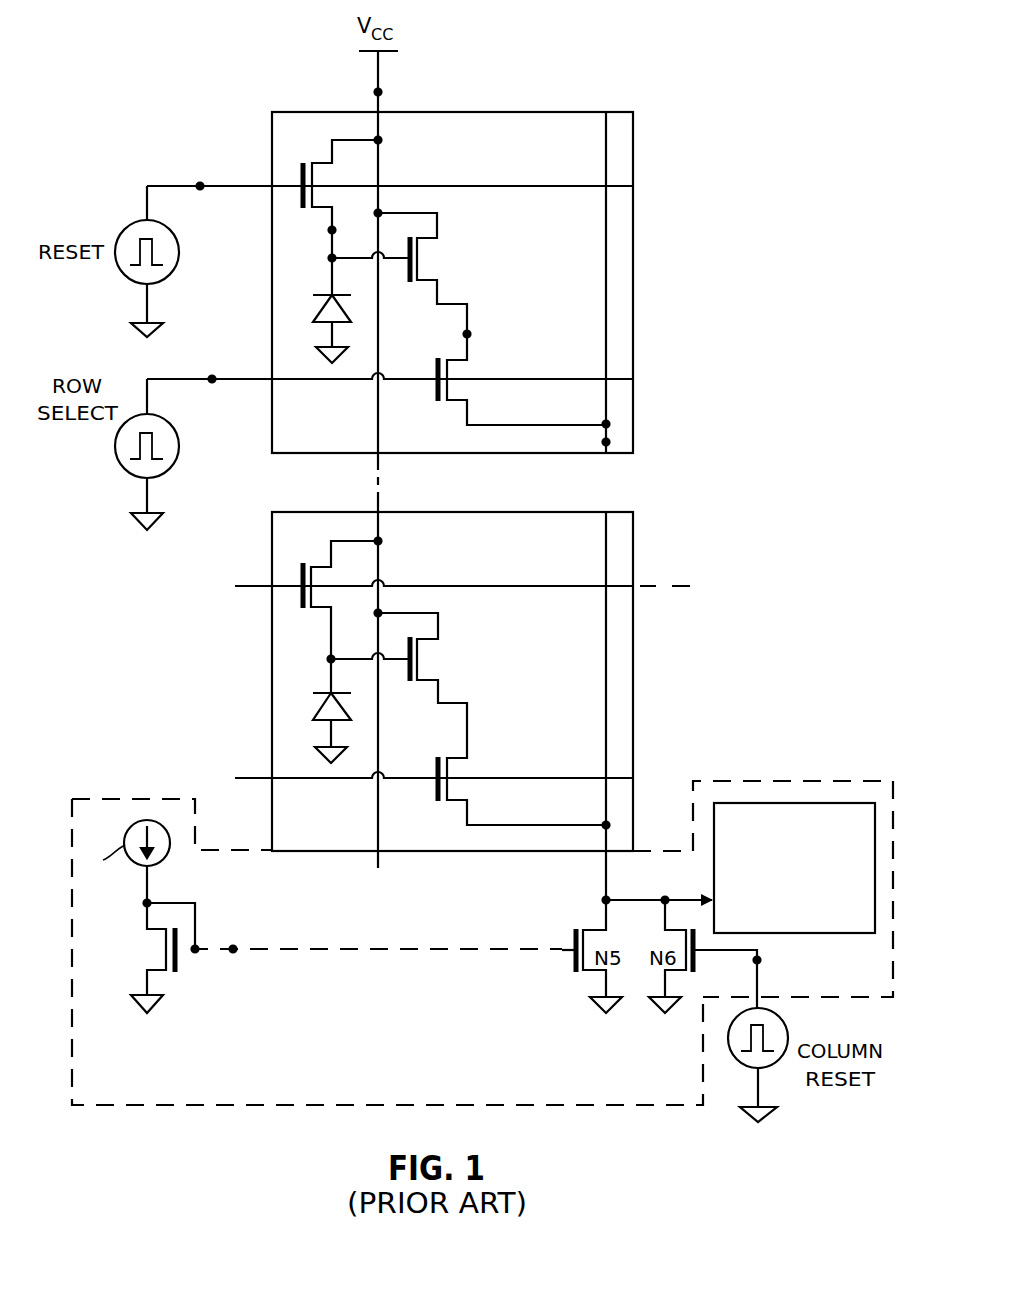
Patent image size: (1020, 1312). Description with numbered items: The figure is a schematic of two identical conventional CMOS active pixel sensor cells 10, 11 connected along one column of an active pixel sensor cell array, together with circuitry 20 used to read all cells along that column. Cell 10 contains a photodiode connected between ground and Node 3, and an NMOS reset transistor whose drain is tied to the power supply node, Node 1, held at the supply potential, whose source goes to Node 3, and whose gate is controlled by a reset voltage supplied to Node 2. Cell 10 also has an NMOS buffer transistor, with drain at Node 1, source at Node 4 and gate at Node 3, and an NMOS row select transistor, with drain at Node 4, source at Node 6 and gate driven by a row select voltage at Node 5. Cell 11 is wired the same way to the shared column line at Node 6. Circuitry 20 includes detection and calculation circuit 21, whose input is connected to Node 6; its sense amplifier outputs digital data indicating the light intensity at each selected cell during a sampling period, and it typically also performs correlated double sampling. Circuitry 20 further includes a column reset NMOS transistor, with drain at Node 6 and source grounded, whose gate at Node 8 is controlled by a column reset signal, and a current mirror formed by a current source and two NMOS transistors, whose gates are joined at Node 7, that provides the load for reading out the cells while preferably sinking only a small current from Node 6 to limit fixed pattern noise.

The power supply node 1 is at (381, 91).
The reset gate node 2 is at (199, 183).
The photodiode node 3 is at (329, 231).
The buffer output node 4 is at (470, 333).
The row select gate node 5 is at (211, 376).
The column output node 6 is at (609, 441).
The current mirror gate node 7 is at (234, 946).
The column reset gate node 8 is at (760, 961).
The active pixel sensor cell 10 is at (549, 111).
The active pixel sensor cell 11 is at (470, 512).
The readout circuitry 20 is at (113, 797).
The detection and calculation circuit 21 is at (781, 803).